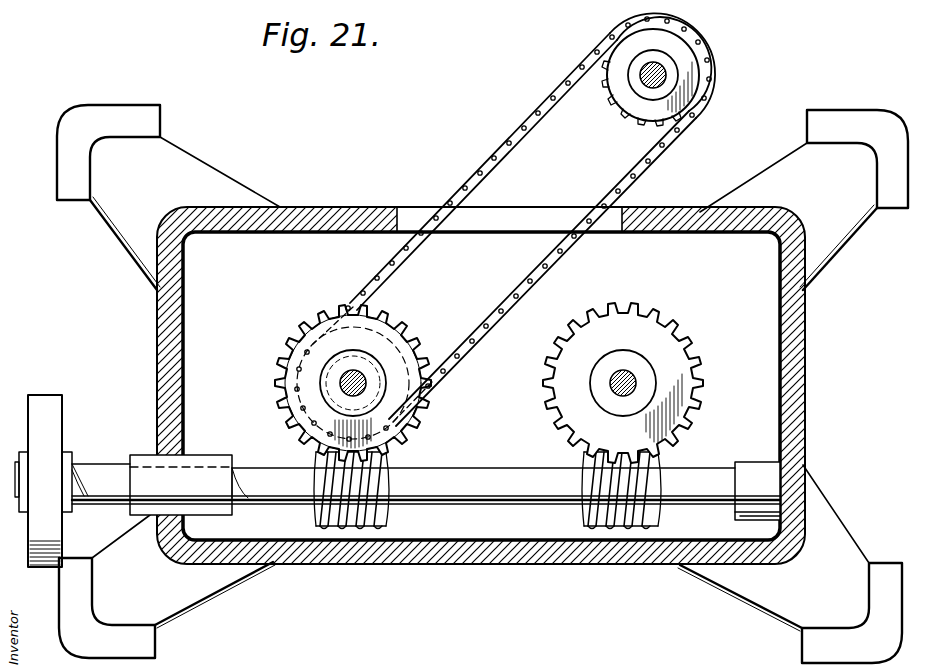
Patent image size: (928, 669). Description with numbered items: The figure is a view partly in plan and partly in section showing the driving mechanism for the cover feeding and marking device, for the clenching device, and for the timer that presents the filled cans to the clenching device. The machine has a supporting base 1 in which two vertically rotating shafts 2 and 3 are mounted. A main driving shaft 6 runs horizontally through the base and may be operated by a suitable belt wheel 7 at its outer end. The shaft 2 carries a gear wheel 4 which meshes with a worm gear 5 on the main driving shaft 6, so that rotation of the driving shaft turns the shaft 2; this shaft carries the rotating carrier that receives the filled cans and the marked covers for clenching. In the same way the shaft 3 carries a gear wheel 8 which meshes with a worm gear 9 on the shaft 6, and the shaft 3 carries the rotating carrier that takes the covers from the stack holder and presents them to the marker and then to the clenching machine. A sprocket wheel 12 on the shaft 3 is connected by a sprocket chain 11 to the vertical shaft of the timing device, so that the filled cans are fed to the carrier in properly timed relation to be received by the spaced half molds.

The supporting base 1 is at (806, 394).
The vertically rotating shaft 2 is at (627, 377).
The vertically rotating shaft 3 is at (358, 379).
The gear wheel 4 is at (615, 327).
The worm gear 5 is at (582, 516).
The main driving shaft 6 is at (497, 501).
The belt wheel 7 is at (53, 424).
The gear wheel 8 is at (410, 412).
The worm gear 9 is at (378, 519).
The sprocket chain 11 is at (474, 181).
The sprocket wheel 12 is at (392, 309).